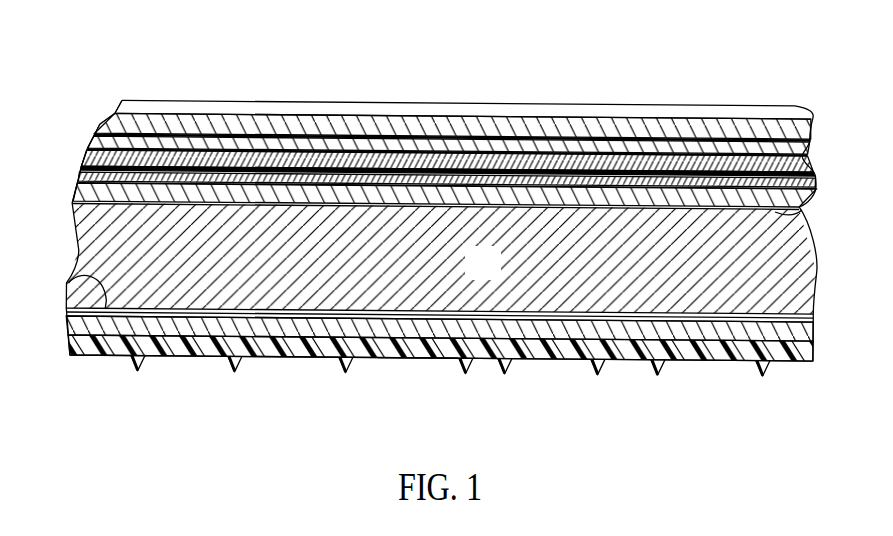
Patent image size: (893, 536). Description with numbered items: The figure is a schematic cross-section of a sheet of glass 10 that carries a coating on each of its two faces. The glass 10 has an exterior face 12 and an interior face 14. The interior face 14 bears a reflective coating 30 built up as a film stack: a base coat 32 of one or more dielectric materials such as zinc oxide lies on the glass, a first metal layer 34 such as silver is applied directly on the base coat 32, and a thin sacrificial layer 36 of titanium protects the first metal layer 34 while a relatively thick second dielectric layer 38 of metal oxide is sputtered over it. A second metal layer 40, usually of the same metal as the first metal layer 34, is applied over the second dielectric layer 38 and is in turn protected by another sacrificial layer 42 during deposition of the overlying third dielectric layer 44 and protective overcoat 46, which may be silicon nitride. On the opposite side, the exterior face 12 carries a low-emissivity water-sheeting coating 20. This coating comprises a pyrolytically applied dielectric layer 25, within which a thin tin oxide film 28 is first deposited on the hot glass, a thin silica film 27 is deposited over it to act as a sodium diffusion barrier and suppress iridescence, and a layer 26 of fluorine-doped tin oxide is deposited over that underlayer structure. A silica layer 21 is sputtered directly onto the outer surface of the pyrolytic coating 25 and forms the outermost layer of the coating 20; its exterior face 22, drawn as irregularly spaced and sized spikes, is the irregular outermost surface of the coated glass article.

The sheet of glass 10 is at (495, 274).
The exterior face 12 is at (70, 283).
The interior face 14 is at (784, 213).
The low-emissivity water-sheeting coating 20 is at (61, 305).
The silica layer 21 is at (570, 362).
The exterior face of silica layer 22 is at (425, 362).
The pyrolytically applied dielectric layer 25 is at (831, 313).
The fluorine-doped tin oxide layer 26 is at (812, 345).
The silica film 27 is at (812, 321).
The tin oxide film 28 is at (812, 314).
The reflective coating 30 is at (804, 107).
The base coat 32 is at (78, 197).
The first metal layer 34 is at (82, 178).
The sacrificial layer 36 is at (86, 168).
The second dielectric layer 38 is at (86, 158).
The second metal layer 40 is at (97, 137).
The sacrificial layer 42 is at (157, 136).
The third dielectric layer 44 is at (255, 122).
The protective overcoat 46 is at (376, 112).